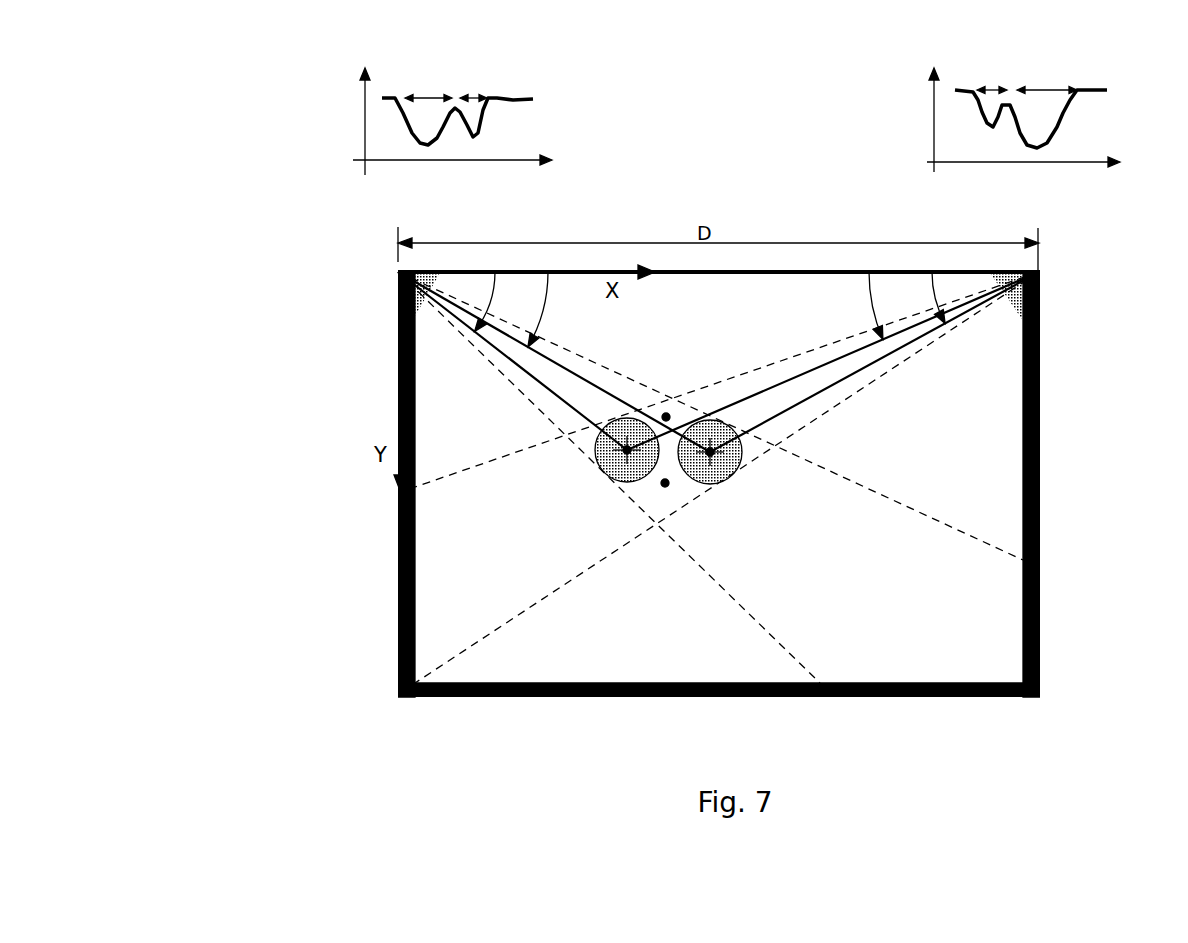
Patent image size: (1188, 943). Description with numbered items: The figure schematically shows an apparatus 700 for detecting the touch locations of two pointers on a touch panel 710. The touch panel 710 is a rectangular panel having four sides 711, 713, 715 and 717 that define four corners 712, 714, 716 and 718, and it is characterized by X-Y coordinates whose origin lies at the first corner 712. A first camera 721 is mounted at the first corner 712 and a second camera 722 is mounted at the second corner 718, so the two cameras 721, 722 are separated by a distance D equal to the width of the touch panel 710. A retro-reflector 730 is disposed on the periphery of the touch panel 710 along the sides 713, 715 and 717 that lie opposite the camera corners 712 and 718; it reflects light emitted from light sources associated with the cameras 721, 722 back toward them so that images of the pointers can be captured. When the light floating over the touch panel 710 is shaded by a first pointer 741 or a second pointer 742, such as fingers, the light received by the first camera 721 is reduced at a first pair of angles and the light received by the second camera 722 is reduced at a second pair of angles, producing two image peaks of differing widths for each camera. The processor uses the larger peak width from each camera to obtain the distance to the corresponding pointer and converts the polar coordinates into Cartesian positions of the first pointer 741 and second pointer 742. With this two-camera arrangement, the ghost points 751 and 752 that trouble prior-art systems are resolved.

The apparatus for detecting touch locations 700 is at (682, 34).
The touch panel 710 is at (915, 410).
The side 711 is at (813, 271).
The first corner 712 is at (397, 273).
The side 713 is at (400, 428).
The corner 714 is at (390, 697).
The side 715 is at (882, 697).
The corner 716 is at (1040, 697).
The side 717 is at (1030, 388).
The second corner 718 is at (1040, 272).
The first camera 721 is at (413, 290).
The second camera 722 is at (1028, 288).
The retro-reflector 730 is at (398, 552).
The first pointer 741 is at (615, 466).
The second pointer 742 is at (722, 466).
The ghost point 751 is at (667, 413).
The ghost point 752 is at (665, 487).